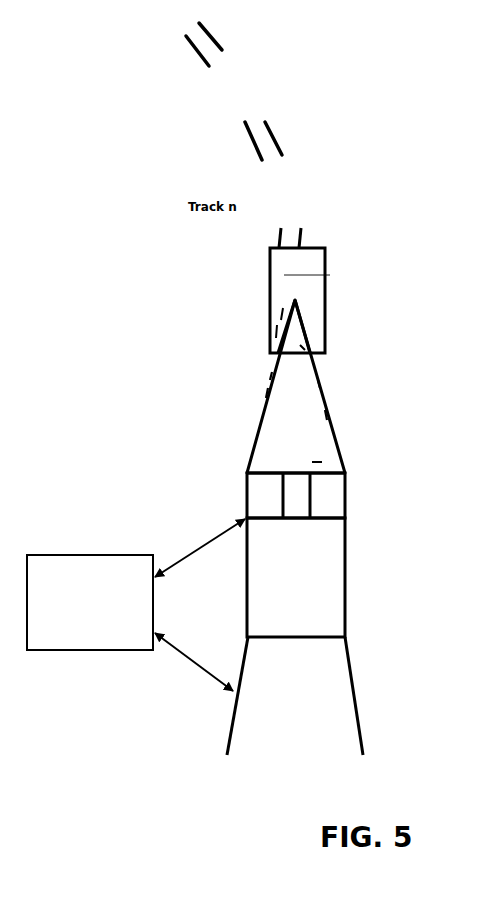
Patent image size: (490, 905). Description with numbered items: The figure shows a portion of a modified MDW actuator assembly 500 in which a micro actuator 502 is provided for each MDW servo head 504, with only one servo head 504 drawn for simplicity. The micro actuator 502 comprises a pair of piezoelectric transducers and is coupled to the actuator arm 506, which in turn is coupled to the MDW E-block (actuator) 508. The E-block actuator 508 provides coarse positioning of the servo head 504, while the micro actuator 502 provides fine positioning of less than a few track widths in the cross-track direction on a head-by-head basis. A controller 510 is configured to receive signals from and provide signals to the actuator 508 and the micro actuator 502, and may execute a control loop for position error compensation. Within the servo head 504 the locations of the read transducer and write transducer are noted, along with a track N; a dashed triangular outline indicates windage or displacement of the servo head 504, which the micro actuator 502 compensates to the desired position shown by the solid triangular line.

The modified MDW actuator assembly 500 is at (370, 388).
The micro actuator 502 is at (267, 498).
The MDW servo head 504 is at (328, 290).
The actuator arm 506 is at (330, 581).
The MDW E-block (actuator) 508 is at (325, 702).
The controller 510 is at (90, 602).